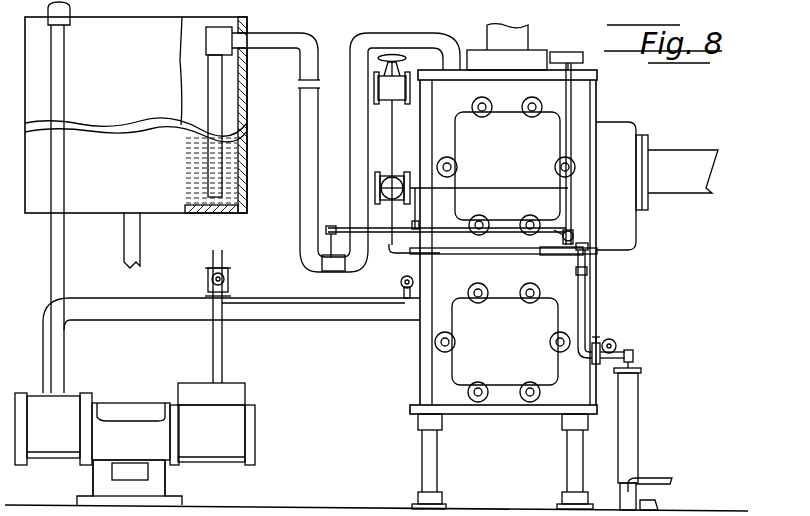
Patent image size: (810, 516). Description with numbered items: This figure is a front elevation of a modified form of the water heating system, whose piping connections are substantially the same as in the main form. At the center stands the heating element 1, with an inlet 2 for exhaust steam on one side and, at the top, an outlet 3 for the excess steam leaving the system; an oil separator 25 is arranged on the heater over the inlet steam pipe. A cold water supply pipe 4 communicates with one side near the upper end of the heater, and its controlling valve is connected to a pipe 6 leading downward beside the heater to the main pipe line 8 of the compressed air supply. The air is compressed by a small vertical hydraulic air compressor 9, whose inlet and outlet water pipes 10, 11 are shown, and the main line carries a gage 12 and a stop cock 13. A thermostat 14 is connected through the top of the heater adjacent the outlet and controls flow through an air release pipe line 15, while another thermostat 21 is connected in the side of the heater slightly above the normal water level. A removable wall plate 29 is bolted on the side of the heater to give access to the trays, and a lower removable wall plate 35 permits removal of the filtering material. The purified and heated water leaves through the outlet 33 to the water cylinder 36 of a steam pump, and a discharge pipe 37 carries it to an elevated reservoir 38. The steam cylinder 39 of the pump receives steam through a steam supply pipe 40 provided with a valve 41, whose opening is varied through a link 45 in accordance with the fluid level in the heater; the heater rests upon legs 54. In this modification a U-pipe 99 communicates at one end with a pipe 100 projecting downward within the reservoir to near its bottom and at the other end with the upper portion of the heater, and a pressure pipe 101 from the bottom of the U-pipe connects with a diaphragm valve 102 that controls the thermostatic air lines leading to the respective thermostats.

The heating element 1 is at (503, 232).
The inlet 2 is at (683, 171).
The outlet 3 is at (507, 37).
The cold water supply pipe 4 is at (376, 92).
The pipe 6 is at (393, 158).
The main pipe line 8 is at (586, 318).
The hydraulic air compressor 9 is at (628, 442).
The inlet water pipe 10 is at (667, 478).
The outlet water pipe 11 is at (658, 504).
The gage 12 is at (616, 346).
The stop cock 13 is at (598, 346).
The thermostat 14 is at (568, 56).
The air release pipe line 15 is at (584, 106).
The thermostat 21 is at (410, 238).
The oil separator 25 is at (622, 186).
The removable wall plate 29 is at (506, 166).
The outlet 33 is at (272, 318).
The removable wall plate 35 is at (502, 342).
The water cylinder 36 is at (98, 449).
The discharge pipe 37 is at (64, 274).
The reservoir 38 is at (136, 115).
The steam cylinder 39 is at (212, 424).
The steam supply pipe 40 is at (213, 330).
The valve 41 is at (274, 286).
The link 45 is at (330, 293).
The legs 54 is at (572, 448).
The U-pipe 99 is at (303, 125).
The pipe 100 is at (213, 110).
The pressure pipe 101 is at (380, 234).
The diaphragm valve 102 is at (573, 237).